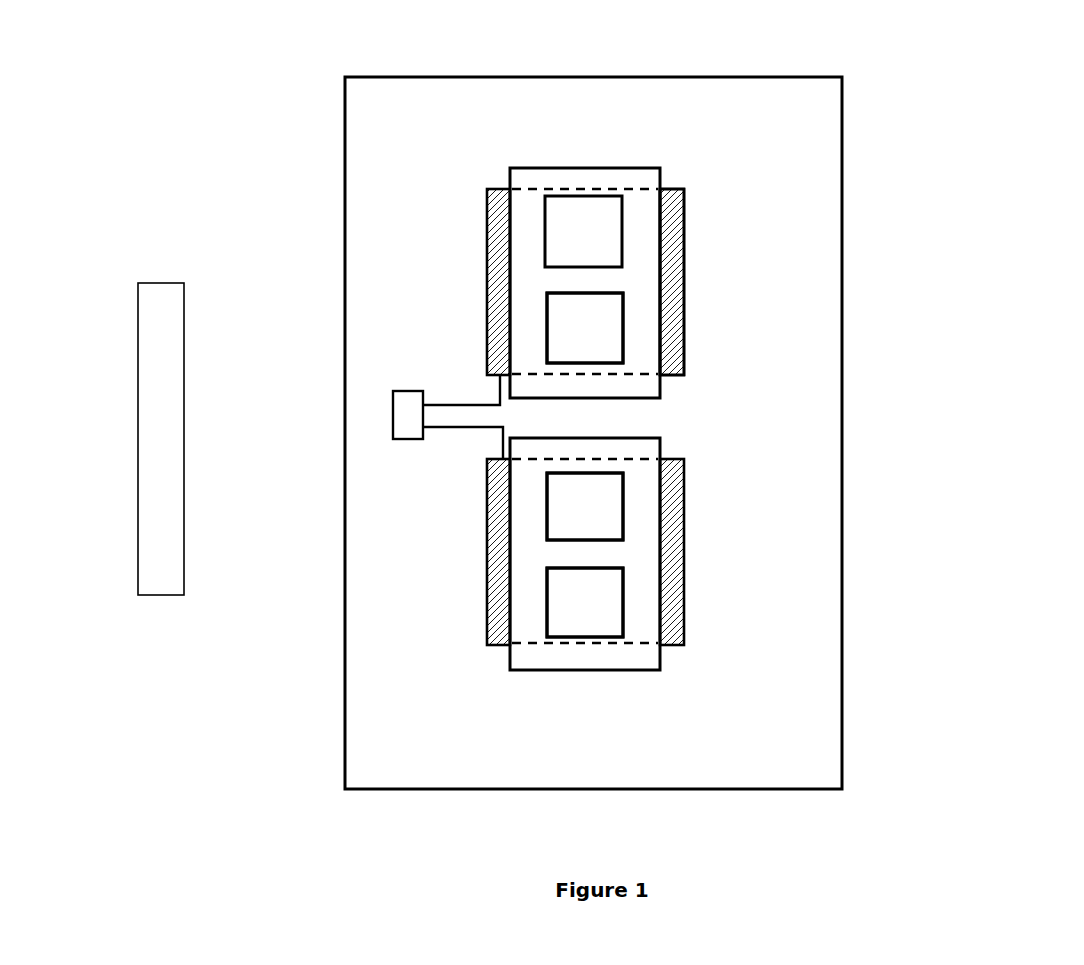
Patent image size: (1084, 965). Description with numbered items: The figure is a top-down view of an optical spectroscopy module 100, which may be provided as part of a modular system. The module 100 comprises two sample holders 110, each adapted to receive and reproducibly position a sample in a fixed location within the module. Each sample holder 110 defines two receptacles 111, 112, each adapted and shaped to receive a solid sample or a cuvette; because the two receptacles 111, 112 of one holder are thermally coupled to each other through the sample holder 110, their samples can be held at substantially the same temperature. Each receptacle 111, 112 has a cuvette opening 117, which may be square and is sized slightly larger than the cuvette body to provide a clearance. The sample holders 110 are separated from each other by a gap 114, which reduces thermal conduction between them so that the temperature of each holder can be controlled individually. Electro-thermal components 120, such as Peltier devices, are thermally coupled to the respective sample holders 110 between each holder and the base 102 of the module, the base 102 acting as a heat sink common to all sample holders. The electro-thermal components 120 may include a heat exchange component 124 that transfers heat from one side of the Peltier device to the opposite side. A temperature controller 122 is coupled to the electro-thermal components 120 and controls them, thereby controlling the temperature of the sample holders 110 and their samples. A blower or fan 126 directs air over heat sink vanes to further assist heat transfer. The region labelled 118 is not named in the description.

The optical spectroscopy module 100 is at (327, 68).
The base 102 is at (407, 372).
The sample holder 110 is at (506, 176).
The receptacle 111 is at (569, 192).
The receptacle 112 is at (604, 293).
The gap 114 is at (620, 413).
The cuvette opening 117 is at (592, 333).
The first contact 118 is at (525, 303).
The electro-thermal component 120 is at (686, 272).
The temperature controller 122 is at (382, 417).
The heat exchange component 124 is at (690, 215).
The blower or fan 126 is at (130, 498).